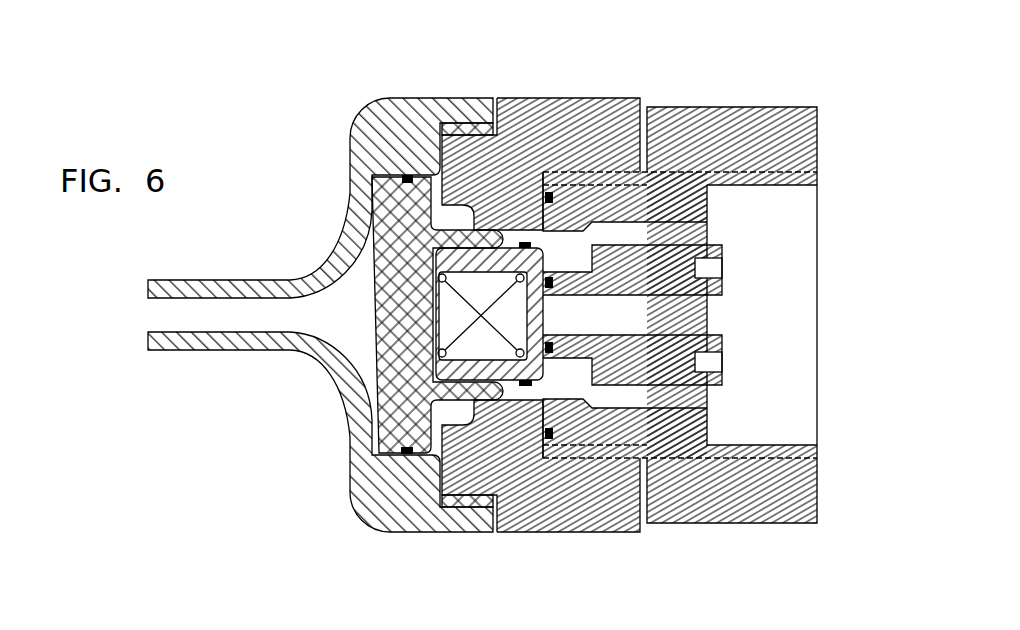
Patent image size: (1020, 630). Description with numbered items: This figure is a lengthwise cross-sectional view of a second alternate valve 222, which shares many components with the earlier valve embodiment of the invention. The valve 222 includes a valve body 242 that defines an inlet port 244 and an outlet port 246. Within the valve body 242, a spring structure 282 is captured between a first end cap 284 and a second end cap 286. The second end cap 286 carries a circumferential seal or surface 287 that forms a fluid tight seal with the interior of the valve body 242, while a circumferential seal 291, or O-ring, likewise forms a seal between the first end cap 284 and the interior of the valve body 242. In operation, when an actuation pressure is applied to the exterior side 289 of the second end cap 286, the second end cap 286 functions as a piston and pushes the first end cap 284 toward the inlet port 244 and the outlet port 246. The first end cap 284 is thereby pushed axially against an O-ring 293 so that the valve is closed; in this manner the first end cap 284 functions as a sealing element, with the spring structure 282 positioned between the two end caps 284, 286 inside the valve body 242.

The valve 222 is at (797, 84).
The valve body 242 is at (536, 94).
The inlet port 244 is at (691, 224).
The outlet port 246 is at (690, 293).
The spring structure 282 is at (455, 340).
The first end cap 284 is at (500, 368).
The second end cap 286 is at (377, 392).
The circumferential seal 287 is at (405, 176).
The exterior side 289 is at (370, 288).
The circumferential seal 291 is at (525, 243).
The O-ring 293 is at (548, 283).